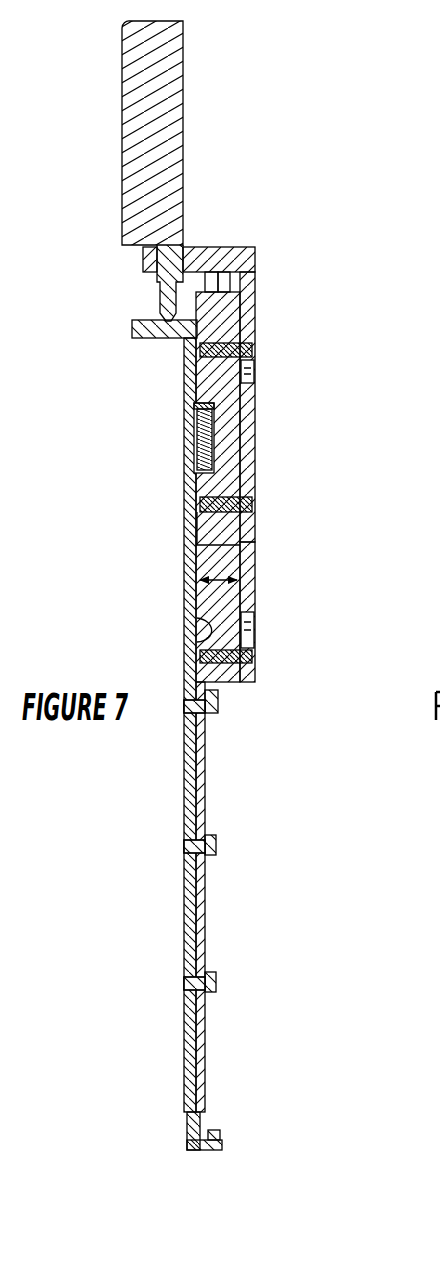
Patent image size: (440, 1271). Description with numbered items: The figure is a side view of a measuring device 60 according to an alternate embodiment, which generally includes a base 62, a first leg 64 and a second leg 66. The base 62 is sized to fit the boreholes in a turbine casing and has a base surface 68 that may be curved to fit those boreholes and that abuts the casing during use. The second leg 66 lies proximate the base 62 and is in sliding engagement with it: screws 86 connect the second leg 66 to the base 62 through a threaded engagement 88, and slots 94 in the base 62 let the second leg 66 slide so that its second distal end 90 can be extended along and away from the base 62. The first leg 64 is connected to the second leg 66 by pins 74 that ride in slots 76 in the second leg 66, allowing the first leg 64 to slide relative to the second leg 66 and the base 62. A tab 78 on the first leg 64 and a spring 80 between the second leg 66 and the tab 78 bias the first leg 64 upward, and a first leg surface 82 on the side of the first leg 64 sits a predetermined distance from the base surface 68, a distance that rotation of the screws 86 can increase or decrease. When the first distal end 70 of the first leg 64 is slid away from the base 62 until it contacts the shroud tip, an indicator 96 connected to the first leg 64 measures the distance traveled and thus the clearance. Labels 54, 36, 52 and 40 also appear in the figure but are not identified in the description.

The indicator 96 is at (184, 95).
The second leg 66 is at (207, 290).
The slots 94 is at (251, 370).
The measuring device 60 is at (338, 354).
The flange 54 is at (196, 342).
The tab 78 is at (185, 403).
The base 62 is at (259, 423).
The spring 80 is at (186, 452).
The screws 86 is at (253, 503).
The threaded engagement 88 is at (196, 507).
The gap 36 is at (255, 565).
The base surface 68 is at (256, 578).
The first leg 64 is at (182, 590).
The lower plate 52 is at (253, 610).
The first leg surface 82 is at (194, 633).
The pins 74 is at (217, 847).
The slots 76 is at (206, 858).
The second distal end 90 is at (218, 1133).
The rail 40 is at (224, 1146).
The first distal end 70 is at (192, 1154).